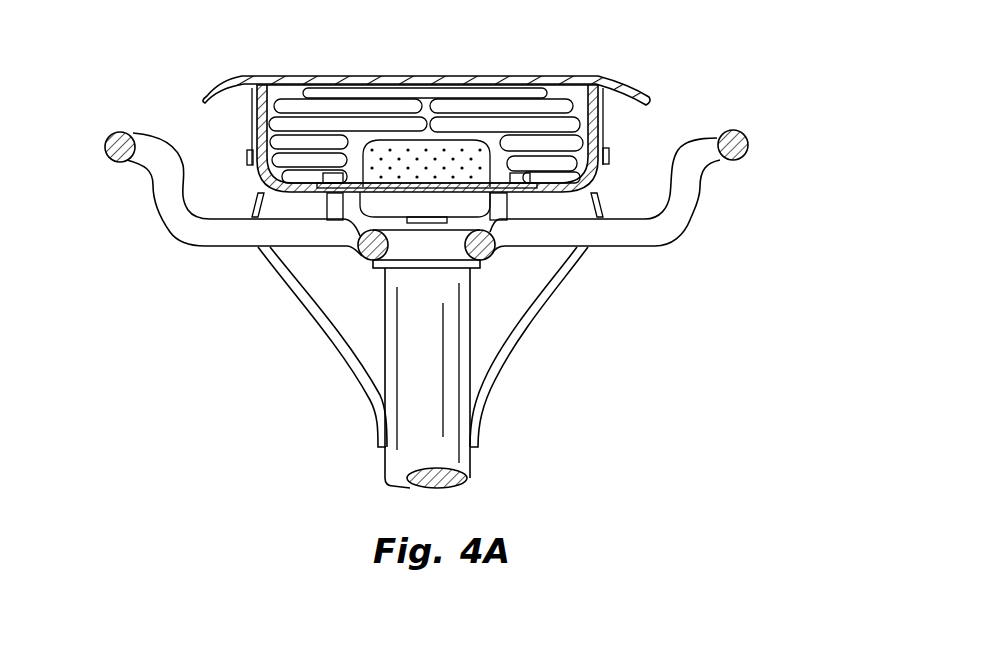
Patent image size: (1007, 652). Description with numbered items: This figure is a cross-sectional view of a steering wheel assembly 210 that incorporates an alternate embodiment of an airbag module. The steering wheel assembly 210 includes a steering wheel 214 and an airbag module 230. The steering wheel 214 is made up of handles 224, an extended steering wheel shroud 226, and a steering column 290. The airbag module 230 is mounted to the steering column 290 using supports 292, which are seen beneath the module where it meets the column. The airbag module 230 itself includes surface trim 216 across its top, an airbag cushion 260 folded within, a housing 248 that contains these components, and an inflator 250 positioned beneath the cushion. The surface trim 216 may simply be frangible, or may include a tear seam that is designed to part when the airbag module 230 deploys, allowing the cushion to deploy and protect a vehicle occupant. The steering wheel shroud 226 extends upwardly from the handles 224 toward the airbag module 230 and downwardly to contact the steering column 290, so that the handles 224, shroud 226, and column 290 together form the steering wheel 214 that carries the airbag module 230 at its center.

The steering wheel assembly 210 is at (722, 63).
The surface trim 216 is at (275, 76).
The airbag cushion 260 is at (368, 93).
The airbag module 230 is at (684, 102).
The handles 224 is at (118, 162).
The steering wheel 214 is at (714, 191).
The housing 248 is at (590, 182).
The supports 292 is at (327, 208).
The inflator 250 is at (470, 208).
The steering wheel shroud 226 is at (532, 338).
The steering column 290 is at (440, 432).